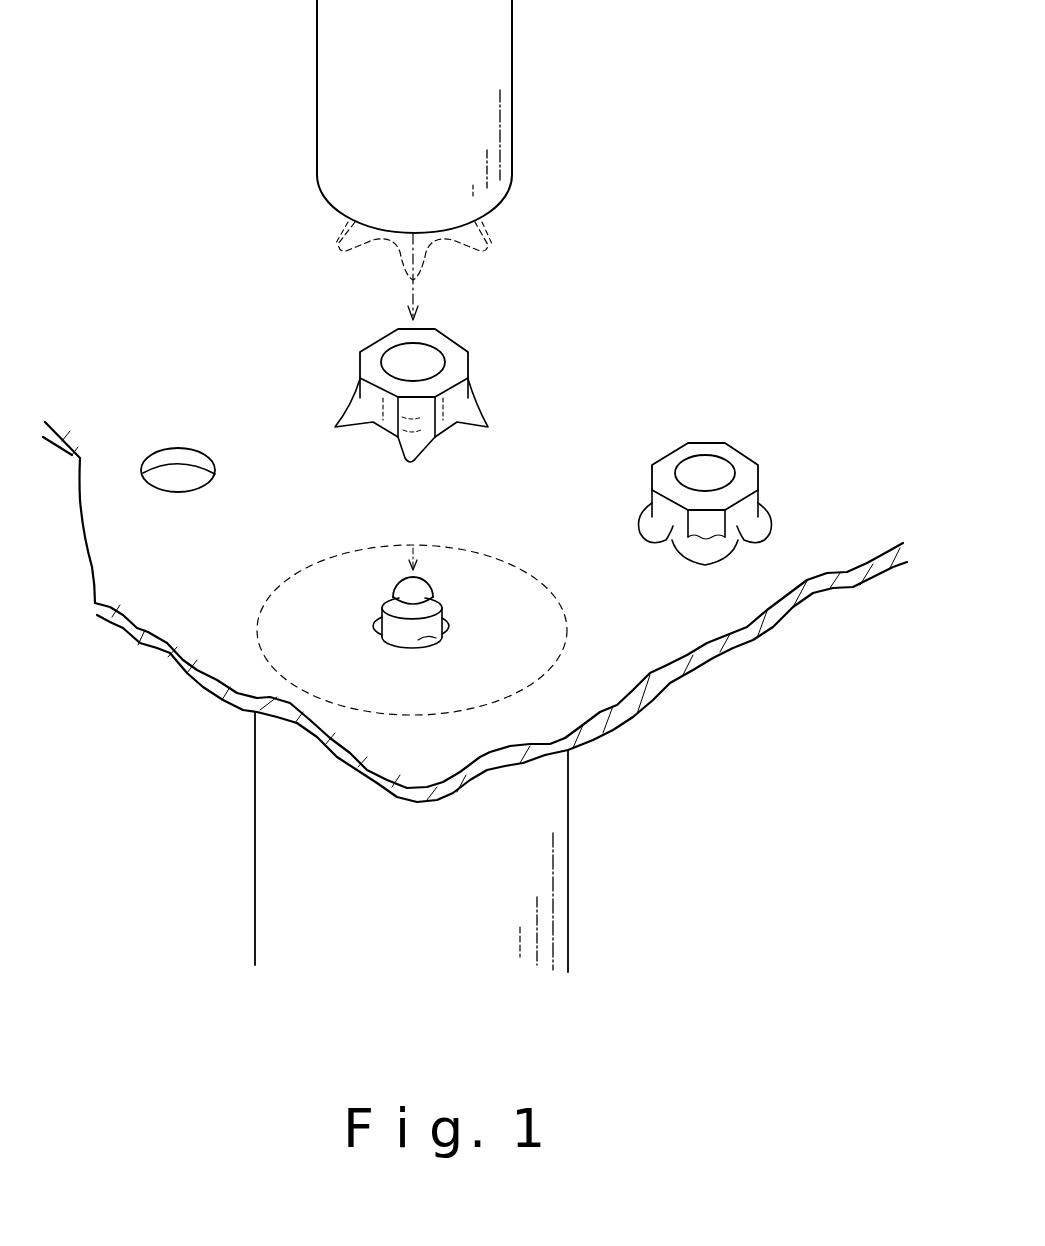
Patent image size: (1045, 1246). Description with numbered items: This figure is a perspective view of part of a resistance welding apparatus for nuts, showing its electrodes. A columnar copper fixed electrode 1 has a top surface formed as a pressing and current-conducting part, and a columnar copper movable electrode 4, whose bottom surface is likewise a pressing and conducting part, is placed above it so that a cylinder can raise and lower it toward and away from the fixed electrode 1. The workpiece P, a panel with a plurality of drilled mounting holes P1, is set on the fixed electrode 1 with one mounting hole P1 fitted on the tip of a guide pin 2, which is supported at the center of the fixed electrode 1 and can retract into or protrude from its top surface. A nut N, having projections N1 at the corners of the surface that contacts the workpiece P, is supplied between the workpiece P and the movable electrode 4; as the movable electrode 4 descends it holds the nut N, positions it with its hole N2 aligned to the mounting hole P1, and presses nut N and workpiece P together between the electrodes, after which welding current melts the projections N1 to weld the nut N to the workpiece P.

The movable electrode 4 is at (512, 48).
The nut N is at (458, 235).
The projections N1 is at (477, 492).
The hole N2 is at (717, 392).
The workpiece P is at (737, 648).
The mounting hole P1 is at (455, 662).
The guide pin 2 is at (383, 603).
The fixed electrode 1 is at (569, 893).